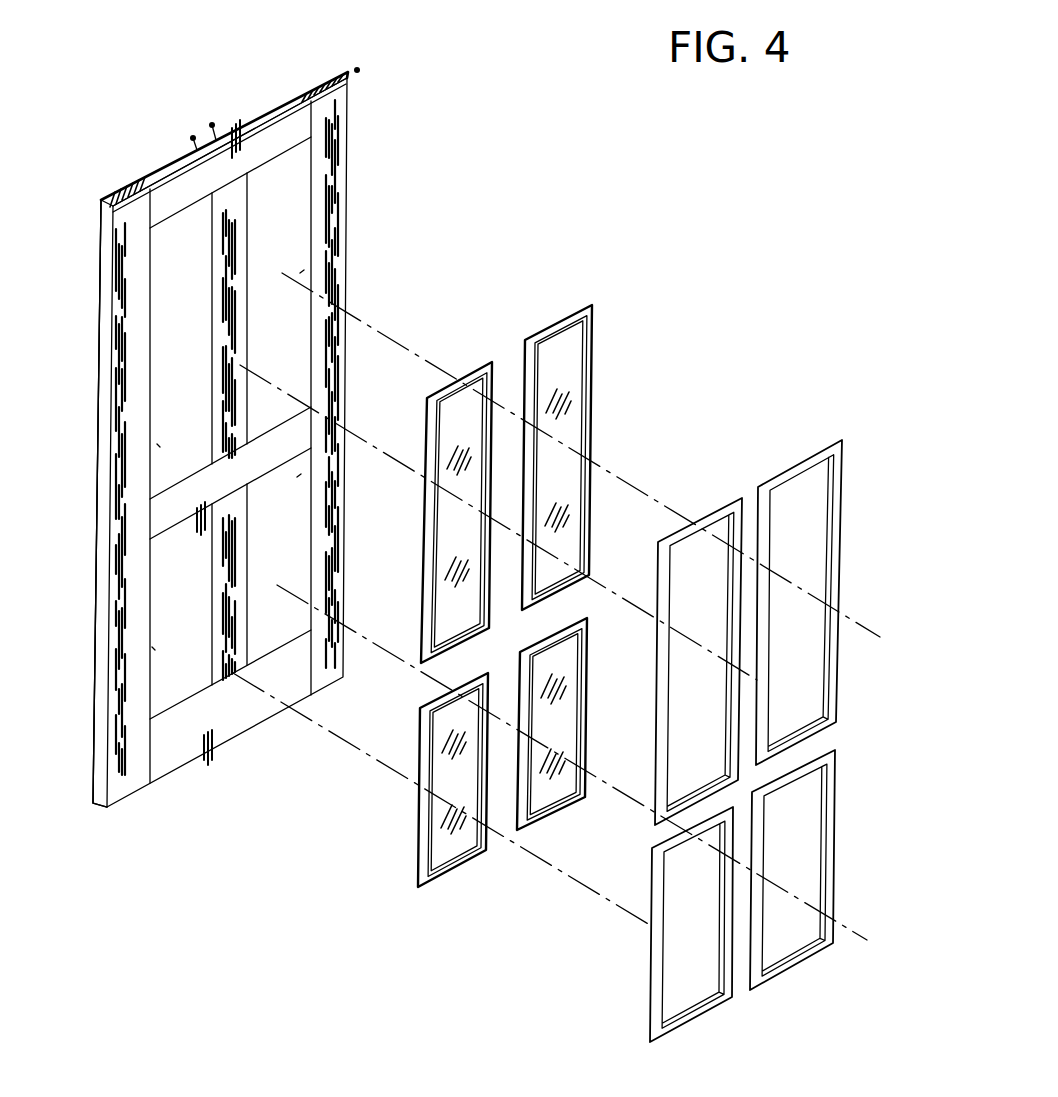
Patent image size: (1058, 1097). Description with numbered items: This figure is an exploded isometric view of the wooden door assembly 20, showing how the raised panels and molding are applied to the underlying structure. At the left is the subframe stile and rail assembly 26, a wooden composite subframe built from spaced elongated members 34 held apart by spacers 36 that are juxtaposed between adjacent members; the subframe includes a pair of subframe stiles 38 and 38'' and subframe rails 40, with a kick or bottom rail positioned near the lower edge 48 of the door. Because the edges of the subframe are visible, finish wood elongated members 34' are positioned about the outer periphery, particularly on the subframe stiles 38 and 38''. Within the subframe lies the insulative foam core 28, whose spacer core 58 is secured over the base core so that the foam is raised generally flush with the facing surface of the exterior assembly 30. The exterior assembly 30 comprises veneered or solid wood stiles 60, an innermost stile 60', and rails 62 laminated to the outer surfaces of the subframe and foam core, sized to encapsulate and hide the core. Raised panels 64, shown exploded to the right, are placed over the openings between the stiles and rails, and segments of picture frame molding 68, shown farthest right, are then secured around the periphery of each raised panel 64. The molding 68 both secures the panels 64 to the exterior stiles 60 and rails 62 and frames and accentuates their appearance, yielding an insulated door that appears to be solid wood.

The wooden door assembly 20 is at (469, 153).
The subframe stile and rail assembly 26 is at (137, 182).
The insulative foam core 28 is at (306, 218).
The exterior stile, rail, and raised panel assembly 30 is at (211, 124).
The elongated member 34 is at (186, 402).
The finish wood elongated member 34' is at (153, 432).
The spacer 36 is at (321, 91).
The subframe stile 38 is at (68, 503).
The subframe stile 38'' is at (401, 82).
The subframe rail 40 is at (190, 136).
The lower edge 48 is at (208, 760).
The spacer core 58 is at (304, 273).
The exterior stile 60 is at (232, 437).
The innermost stile 60' is at (196, 442).
The exterior rail 62 is at (257, 158).
The raised panel 64 is at (466, 621).
The molding 68 is at (779, 484).